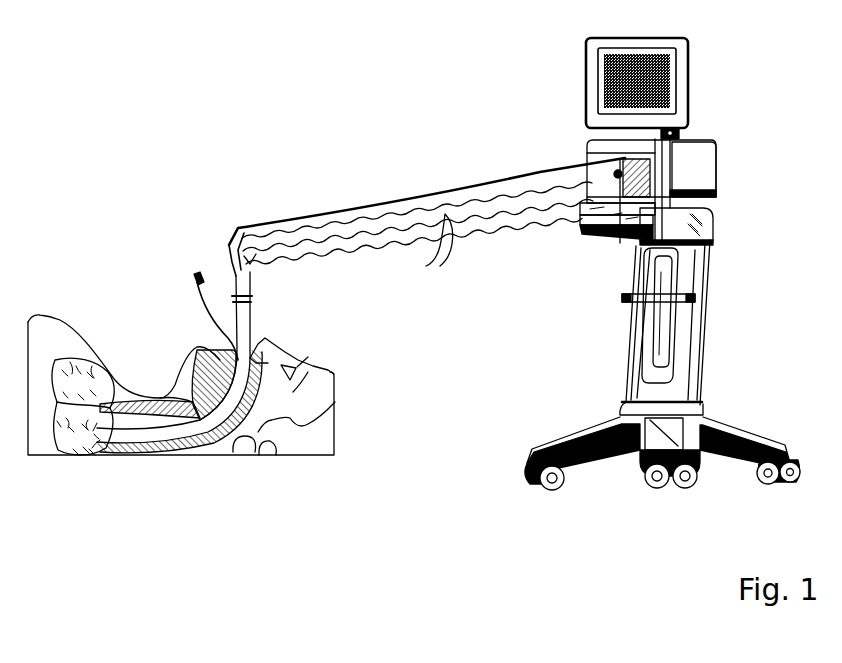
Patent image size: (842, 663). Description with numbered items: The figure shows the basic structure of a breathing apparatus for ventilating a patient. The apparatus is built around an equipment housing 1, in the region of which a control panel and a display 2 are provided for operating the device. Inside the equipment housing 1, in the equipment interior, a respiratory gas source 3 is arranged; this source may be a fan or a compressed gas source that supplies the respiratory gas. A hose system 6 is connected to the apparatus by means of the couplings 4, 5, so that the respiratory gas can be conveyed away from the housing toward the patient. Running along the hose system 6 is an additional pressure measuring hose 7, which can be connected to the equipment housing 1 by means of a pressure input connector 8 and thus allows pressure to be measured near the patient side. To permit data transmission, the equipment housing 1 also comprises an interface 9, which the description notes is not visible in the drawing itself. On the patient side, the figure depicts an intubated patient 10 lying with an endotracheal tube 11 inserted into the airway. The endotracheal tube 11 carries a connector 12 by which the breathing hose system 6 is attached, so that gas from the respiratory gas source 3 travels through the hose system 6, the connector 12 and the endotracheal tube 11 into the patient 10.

The equipment housing 1 is at (703, 300).
The display 2 is at (676, 80).
The respiratory gas source 3 is at (717, 183).
The coupling 4 is at (620, 183).
The coupling 5 is at (614, 169).
The hose system 6 is at (431, 246).
The pressure measuring hose 7 is at (437, 193).
The pressure input connector 8 is at (620, 243).
The interface 9 is at (717, 146).
The intubated patient 10 is at (110, 368).
The endotracheal tube 11 is at (245, 328).
The connector 12 is at (230, 296).